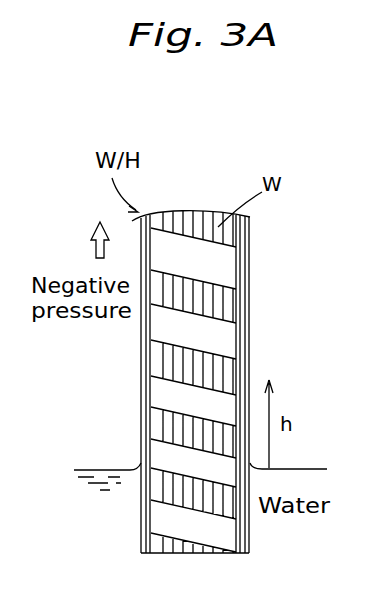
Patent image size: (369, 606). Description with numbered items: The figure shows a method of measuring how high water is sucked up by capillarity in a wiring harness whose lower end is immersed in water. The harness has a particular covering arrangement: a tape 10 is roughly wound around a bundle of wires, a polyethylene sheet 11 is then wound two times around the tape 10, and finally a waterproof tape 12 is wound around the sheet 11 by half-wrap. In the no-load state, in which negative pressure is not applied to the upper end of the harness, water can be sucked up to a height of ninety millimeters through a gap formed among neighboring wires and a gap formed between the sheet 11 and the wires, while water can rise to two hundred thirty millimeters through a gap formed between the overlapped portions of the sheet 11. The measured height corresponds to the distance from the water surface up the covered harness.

The tape 10 is at (219, 350).
The polyethylene sheet 11 is at (243, 300).
The waterproof tape 12 is at (245, 268).